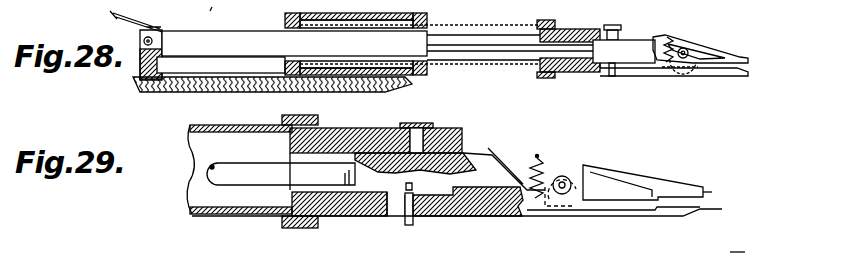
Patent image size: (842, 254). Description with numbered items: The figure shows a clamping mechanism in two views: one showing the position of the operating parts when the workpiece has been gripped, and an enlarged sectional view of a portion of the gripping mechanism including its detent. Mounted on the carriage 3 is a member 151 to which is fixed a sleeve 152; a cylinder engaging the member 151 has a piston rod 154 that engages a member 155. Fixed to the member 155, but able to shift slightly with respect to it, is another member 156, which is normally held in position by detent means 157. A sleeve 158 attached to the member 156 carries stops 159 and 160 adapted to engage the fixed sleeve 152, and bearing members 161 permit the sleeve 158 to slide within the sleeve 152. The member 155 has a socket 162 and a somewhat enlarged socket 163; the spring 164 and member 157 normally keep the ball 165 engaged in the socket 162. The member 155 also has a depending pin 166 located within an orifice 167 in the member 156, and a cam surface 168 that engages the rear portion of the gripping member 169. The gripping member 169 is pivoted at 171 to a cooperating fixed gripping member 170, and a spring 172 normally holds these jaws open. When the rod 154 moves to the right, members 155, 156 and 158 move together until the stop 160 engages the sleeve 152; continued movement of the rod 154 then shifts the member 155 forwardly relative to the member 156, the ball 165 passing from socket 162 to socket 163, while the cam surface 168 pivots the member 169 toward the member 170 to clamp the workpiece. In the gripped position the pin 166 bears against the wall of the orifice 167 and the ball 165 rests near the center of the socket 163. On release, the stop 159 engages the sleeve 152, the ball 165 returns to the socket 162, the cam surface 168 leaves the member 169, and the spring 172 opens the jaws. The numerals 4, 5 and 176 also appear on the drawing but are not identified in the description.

In FIG. 28, the carriage 3 is at (142, 93).
In FIG. 29, the jaw tip 4 is at (715, 191).
In FIG. 28, the support 5 is at (217, 5).
In FIG. 28, the member 151 is at (140, 68).
In FIG. 28, the sleeve 152 is at (380, 13).
In FIG. 28, the piston rod 154 is at (480, 34).
In FIG. 29, the piston rod 154 is at (262, 148).
In FIG. 28, the member 155 is at (640, 40).
In FIG. 29, the member 155 is at (487, 206).
In FIG. 28, the member 156 is at (577, 29).
In FIG. 29, the member 156 is at (338, 243).
In FIG. 28, the detent means 157 is at (612, 25).
In FIG. 29, the detent means 157 is at (402, 123).
In FIG. 28, the sleeve 158 is at (440, 30).
In FIG. 29, the sleeve 158 is at (207, 216).
In FIG. 29, the stop 159 is at (282, 120).
In FIG. 28, the stop 160 is at (285, 17).
In FIG. 28, the bearing members 161 is at (432, 6).
In FIG. 29, the socket 162 is at (480, 155).
In FIG. 29, the enlarged socket 163 is at (384, 128).
In FIG. 29, the spring 164 is at (443, 126).
In FIG. 29, the ball 165 is at (453, 148).
In FIG. 28, the depending pin 166 is at (612, 76).
In FIG. 29, the depending pin 166 is at (410, 226).
In FIG. 28, the orifice 167 is at (602, 65).
In FIG. 29, the orifice 167 is at (395, 216).
In FIG. 28, the cam surface 168 is at (674, 40).
In FIG. 29, the cam surface 168 is at (536, 156).
In FIG. 28, the gripping member 169 is at (716, 46).
In FIG. 29, the gripping member 169 is at (636, 170).
In FIG. 28, the gripping member 170 is at (744, 77).
In FIG. 29, the gripping member 170 is at (682, 222).
In FIG. 29, the pivot 171 is at (577, 189).
In FIG. 29, the spring 172 is at (556, 162).
In FIG. 29, the stop 176 is at (729, 253).